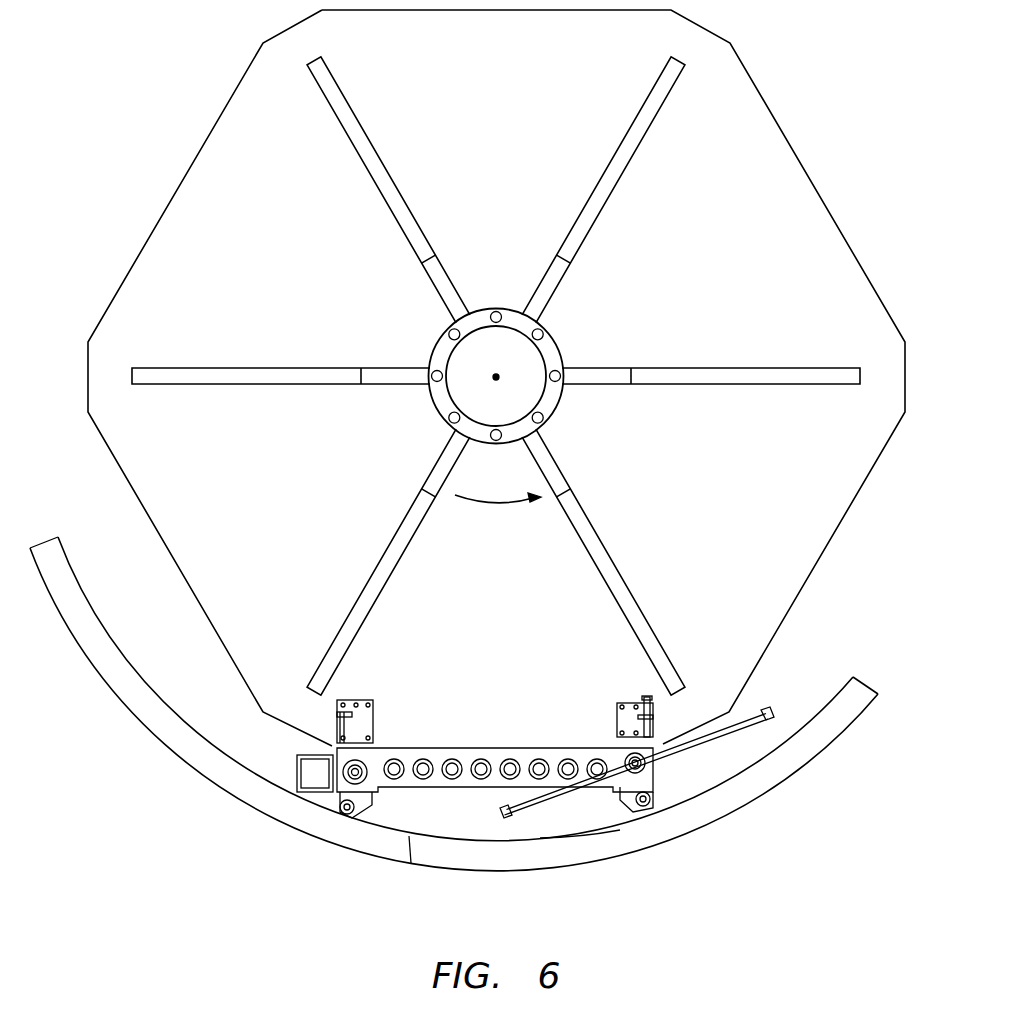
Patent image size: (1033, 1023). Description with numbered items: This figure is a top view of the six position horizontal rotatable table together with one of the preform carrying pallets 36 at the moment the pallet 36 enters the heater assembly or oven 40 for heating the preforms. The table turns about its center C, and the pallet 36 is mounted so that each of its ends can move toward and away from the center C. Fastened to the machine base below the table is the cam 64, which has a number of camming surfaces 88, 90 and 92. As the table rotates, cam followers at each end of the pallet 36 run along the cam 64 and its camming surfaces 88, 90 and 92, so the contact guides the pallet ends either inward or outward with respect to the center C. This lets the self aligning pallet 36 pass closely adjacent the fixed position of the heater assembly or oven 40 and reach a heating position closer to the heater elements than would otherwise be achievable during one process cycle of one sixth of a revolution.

The center of the rotary table C is at (497, 377).
The pallet 36 is at (653, 783).
The heater assembly 40 is at (727, 733).
The cam 64 is at (634, 834).
The camming surface 88 is at (478, 838).
The camming surface 90 is at (580, 836).
The camming surface 92 is at (836, 690).